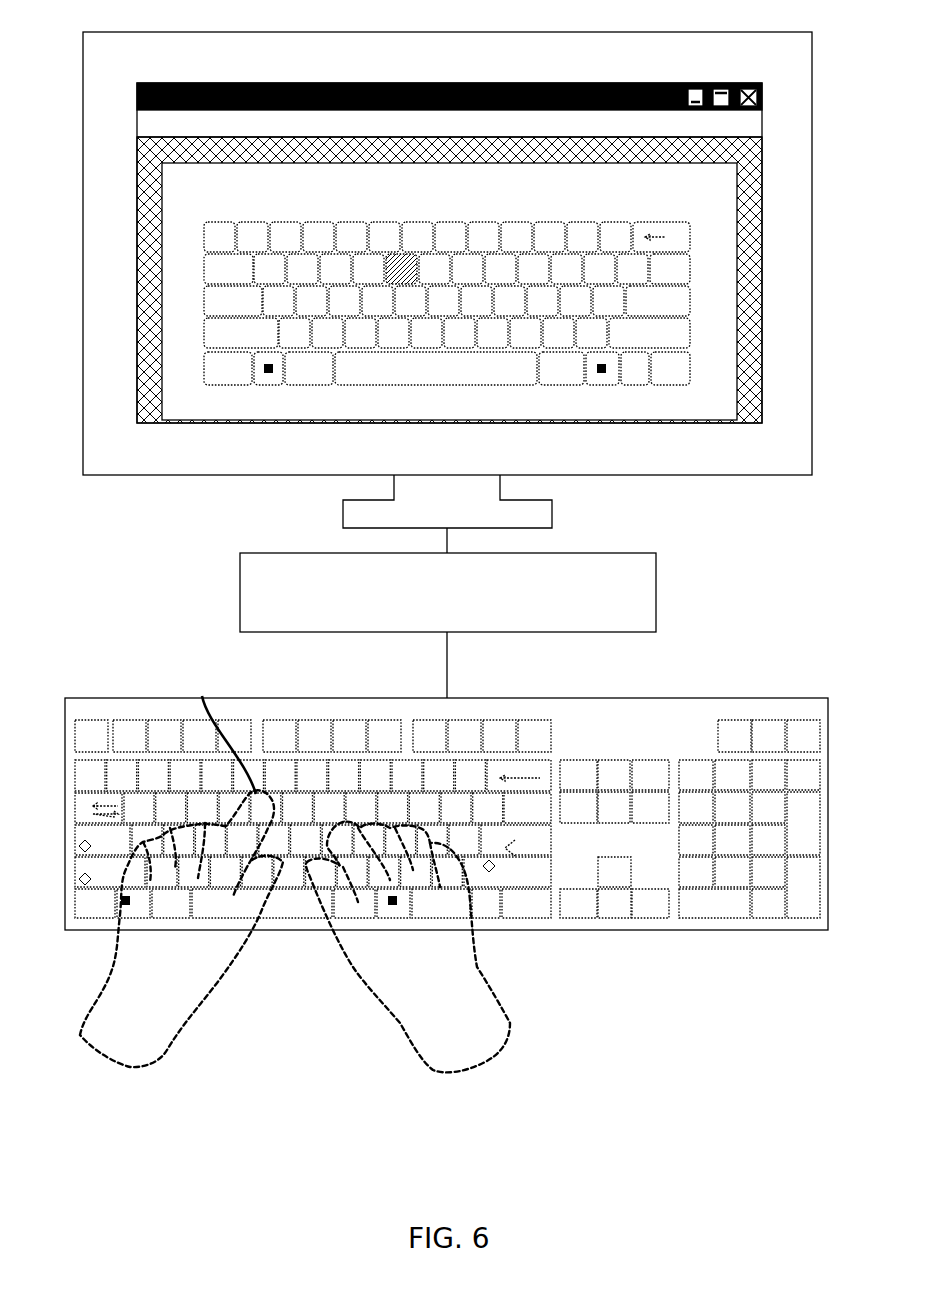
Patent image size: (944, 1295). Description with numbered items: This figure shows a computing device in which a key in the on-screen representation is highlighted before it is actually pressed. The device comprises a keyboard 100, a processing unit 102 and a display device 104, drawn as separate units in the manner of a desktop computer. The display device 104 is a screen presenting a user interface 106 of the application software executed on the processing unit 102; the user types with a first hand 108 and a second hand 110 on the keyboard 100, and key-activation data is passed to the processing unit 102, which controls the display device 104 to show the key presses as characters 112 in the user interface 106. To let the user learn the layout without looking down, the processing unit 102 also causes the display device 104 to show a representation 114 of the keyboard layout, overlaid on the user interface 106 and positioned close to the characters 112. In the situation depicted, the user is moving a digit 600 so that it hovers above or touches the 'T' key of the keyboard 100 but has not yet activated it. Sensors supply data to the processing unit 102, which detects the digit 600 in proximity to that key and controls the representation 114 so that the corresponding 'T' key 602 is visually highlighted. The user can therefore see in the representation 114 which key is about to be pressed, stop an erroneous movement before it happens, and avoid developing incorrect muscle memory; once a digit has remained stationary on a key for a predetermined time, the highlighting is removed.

The keyboard 100 is at (788, 697).
The processing unit 102 is at (656, 590).
The display device 104 is at (742, 33).
The user interface 106 is at (135, 108).
The first hand 108 is at (177, 1033).
The second hand 110 is at (418, 1048).
The characters 112 is at (197, 202).
The representation 114 is at (608, 220).
The digit 600 is at (219, 728).
The 'T' key 602 is at (404, 252).